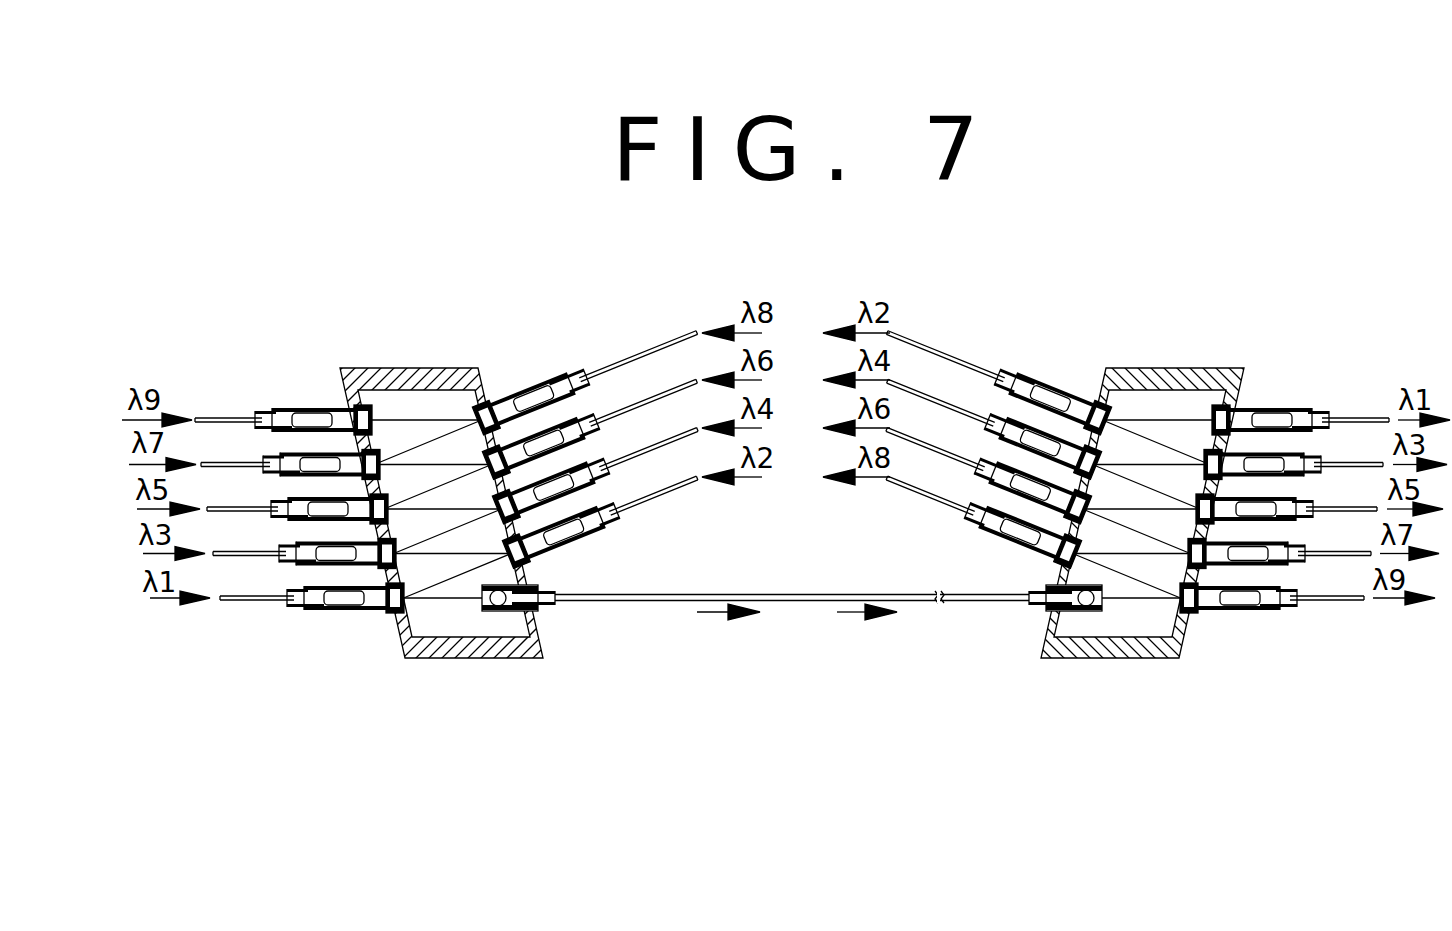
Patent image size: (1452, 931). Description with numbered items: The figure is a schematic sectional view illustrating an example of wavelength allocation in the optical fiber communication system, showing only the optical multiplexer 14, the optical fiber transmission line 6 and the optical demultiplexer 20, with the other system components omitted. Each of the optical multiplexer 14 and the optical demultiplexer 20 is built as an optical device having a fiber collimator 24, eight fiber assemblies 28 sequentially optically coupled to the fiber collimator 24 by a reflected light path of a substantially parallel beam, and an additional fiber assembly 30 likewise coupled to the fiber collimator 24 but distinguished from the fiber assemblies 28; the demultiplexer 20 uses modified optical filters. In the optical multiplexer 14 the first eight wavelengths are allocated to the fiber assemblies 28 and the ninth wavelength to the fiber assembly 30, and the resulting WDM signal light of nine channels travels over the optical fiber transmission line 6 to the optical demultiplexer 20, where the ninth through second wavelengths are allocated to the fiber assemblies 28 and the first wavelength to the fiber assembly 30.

The optical multiplexer 14 is at (397, 348).
The optical demultiplexer 20 is at (1187, 348).
The fiber assemblies 28 is at (795, 504).
The additional fiber assembly 30 is at (792, 375).
The fiber collimator 24 is at (507, 613).
The optical fiber transmission line 6 is at (775, 600).